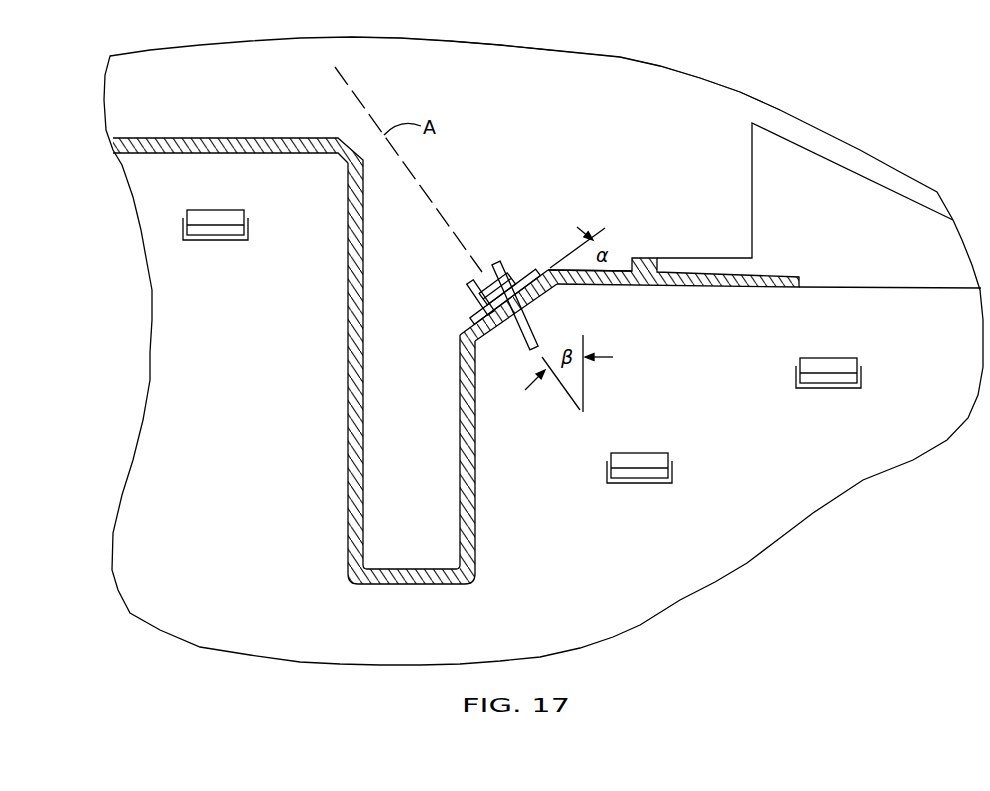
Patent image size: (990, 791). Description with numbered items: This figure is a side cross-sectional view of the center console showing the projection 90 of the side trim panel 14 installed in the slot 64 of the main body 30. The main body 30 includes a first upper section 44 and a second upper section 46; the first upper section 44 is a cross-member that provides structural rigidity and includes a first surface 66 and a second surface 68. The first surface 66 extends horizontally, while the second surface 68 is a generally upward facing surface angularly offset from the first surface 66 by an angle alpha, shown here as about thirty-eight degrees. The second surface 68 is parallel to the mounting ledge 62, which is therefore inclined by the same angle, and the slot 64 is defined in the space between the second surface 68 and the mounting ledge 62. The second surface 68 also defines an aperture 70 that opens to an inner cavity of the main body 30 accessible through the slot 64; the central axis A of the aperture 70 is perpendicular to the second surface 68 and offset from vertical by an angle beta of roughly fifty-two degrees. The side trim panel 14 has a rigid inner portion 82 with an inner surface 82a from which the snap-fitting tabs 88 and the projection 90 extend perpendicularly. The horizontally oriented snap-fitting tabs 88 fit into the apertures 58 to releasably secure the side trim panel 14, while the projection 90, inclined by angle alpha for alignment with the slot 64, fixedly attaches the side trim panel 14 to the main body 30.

The side trim panel 14 is at (621, 52).
The main body 30 is at (143, 352).
The first upper section 44 is at (633, 258).
The second upper section 46 is at (268, 138).
The apertures 58 is at (240, 232).
The mounting ledge 62 is at (465, 330).
The slot 64 is at (476, 352).
The first surface 66 is at (618, 270).
The second surface 68 is at (520, 268).
The aperture 70 is at (485, 303).
The rigid inner portion 82 is at (688, 105).
The inner surface 82a is at (505, 88).
The snap-fitting tabs 88 is at (218, 215).
The projection 90 is at (548, 292).